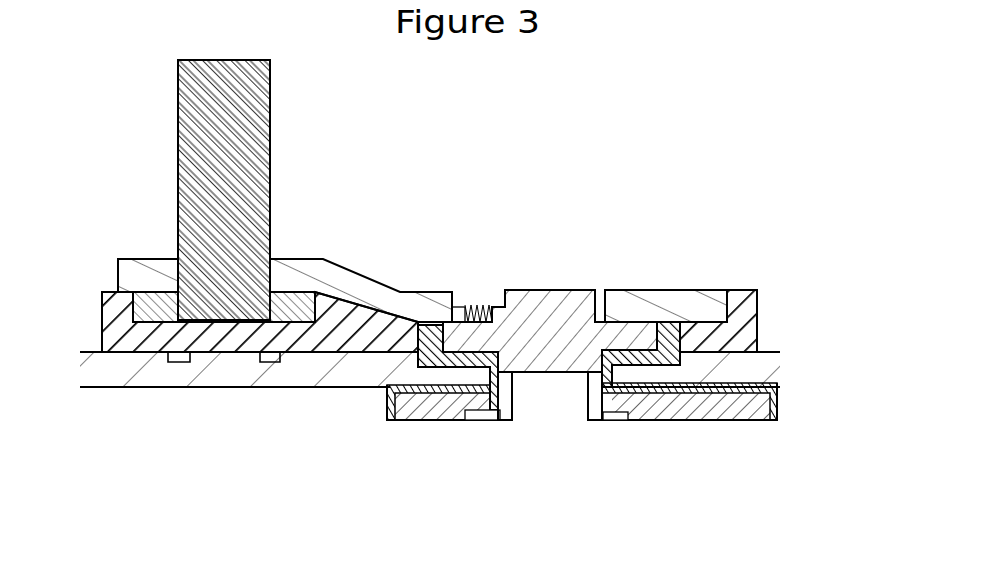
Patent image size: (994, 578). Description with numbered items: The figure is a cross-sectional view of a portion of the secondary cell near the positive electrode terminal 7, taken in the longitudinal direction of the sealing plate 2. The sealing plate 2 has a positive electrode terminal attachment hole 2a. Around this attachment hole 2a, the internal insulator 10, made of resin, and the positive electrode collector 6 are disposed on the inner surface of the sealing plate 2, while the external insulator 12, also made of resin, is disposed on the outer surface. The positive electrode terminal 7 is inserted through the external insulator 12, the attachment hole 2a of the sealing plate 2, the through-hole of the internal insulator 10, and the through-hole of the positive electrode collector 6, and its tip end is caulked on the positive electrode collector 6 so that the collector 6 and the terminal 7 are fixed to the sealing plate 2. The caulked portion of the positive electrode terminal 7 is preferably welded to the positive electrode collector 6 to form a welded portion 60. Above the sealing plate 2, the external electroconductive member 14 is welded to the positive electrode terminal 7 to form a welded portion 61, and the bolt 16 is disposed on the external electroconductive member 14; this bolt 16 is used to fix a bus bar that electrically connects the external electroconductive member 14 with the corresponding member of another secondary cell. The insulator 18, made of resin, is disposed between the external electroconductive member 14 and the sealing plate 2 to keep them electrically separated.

The sealing plate 2 is at (250, 372).
The positive electrode terminal attachment hole 2a is at (598, 377).
The positive electrode collector 6 is at (434, 408).
The positive electrode terminal 7 is at (542, 307).
The internal insulator 10 is at (393, 408).
The external insulator 12 is at (470, 368).
The external electroconductive member 14 is at (372, 293).
The bolt 16 is at (228, 140).
The insulator 18 is at (115, 335).
The welded portion 60 is at (622, 420).
The welded portion 61 is at (482, 305).